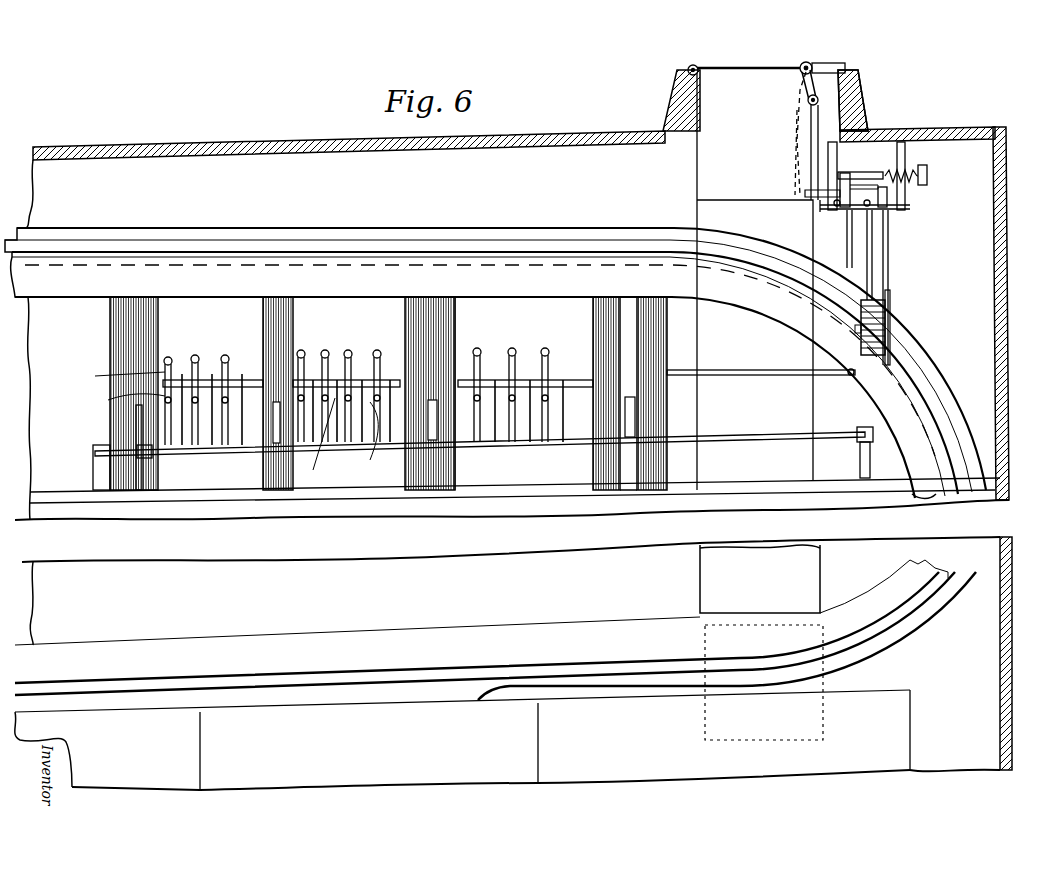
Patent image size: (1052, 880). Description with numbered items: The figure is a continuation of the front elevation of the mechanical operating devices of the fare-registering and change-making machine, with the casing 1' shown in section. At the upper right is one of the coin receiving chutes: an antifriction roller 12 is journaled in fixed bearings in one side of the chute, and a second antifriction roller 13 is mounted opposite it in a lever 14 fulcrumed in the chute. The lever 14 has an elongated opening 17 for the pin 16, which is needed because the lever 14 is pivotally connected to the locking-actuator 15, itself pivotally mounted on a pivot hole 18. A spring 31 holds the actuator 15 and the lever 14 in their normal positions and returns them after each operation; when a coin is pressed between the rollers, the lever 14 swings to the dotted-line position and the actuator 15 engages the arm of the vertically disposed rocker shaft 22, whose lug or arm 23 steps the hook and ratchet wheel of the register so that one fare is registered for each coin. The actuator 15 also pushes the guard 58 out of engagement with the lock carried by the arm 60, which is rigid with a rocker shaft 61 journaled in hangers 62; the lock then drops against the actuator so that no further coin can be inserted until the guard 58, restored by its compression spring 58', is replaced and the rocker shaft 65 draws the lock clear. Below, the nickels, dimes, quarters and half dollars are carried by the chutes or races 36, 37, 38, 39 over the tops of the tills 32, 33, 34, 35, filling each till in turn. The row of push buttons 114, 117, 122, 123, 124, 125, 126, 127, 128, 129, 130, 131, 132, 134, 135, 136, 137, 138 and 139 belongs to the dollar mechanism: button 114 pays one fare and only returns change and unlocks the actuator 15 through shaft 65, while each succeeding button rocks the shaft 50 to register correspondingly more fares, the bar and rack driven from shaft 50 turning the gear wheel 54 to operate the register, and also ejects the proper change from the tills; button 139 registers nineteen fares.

The casing 1' is at (520, 323).
The antifriction roller 12 is at (688, 72).
The antifriction roller 13 is at (812, 65).
The lever 14 is at (805, 80).
The locking-actuator 15 is at (860, 173).
The pin 16 is at (820, 88).
The elongated opening 17 is at (685, 100).
The pivot hole 18 is at (800, 124).
The rocker shaft 22 is at (890, 224).
The lug or arm 23 is at (294, 308).
The spring 31 is at (856, 96).
The nickel tills 32 is at (160, 310).
The dime tills 33 is at (394, 385).
The quarter tills 34 is at (458, 305).
The half dollar tills 35 is at (593, 305).
The chute or race 36 is at (55, 300).
The chute or race 37 is at (880, 640).
The chute or race 38 is at (935, 605).
The chute or race 39 is at (928, 632).
The rocker shaft 50 is at (770, 437).
The gear wheel 54 is at (883, 298).
The guard 58 is at (905, 148).
The compression spring 58' is at (935, 188).
The arm 60 is at (822, 208).
The rocker shaft 61 is at (904, 212).
The hangers 62 is at (828, 160).
The rocker shaft 65 is at (748, 376).
The push button 114 is at (105, 377).
The push button 117 is at (116, 408).
The push button 122 is at (172, 358).
The push button 123 is at (184, 380).
The push button 124 is at (198, 357).
The push button 125 is at (214, 380).
The push button 126 is at (302, 350).
The push button 127 is at (244, 382).
The push button 128 is at (325, 351).
The push button 129 is at (326, 439).
The push button 130 is at (350, 350).
The push button 131 is at (376, 441).
The push button 132 is at (380, 349).
The push button 134 is at (479, 349).
The push button 135 is at (496, 378).
The push button 136 is at (513, 347).
The push button 137 is at (531, 378).
The push button 138 is at (548, 346).
The push button 139 is at (564, 378).